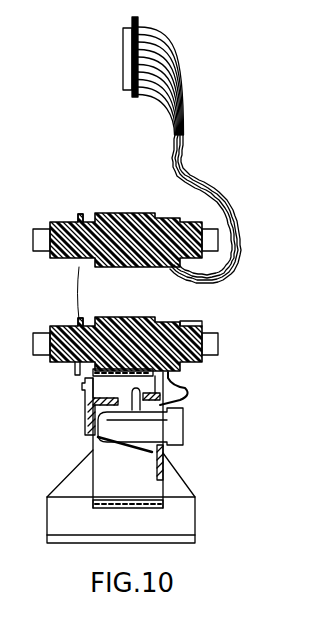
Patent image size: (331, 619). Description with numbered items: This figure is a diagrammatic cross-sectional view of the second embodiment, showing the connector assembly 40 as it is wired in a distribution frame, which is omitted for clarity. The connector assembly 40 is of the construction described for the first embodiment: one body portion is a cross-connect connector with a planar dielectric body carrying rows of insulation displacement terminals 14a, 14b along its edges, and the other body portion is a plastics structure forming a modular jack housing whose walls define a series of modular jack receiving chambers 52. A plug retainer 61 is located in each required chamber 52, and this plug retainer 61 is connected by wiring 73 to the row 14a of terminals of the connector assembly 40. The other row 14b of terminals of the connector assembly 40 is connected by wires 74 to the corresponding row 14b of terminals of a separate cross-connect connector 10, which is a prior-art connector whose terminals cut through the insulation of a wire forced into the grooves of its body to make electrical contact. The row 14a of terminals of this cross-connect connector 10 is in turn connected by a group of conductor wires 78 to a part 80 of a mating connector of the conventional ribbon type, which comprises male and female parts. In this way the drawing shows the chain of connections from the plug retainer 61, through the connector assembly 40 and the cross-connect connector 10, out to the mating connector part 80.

The cross-connect connector 10 is at (146, 213).
The row of terminals 14a is at (192, 329).
The row of terminals 14b is at (70, 222).
The connector assembly 40 is at (210, 328).
The modular jack receiving chamber 52 is at (100, 412).
The plug retainer 61 is at (155, 440).
The wiring 73 is at (192, 393).
The wires 74 is at (75, 273).
The group of conductor wires 78 is at (186, 128).
The part of a mating connector 80 is at (124, 47).